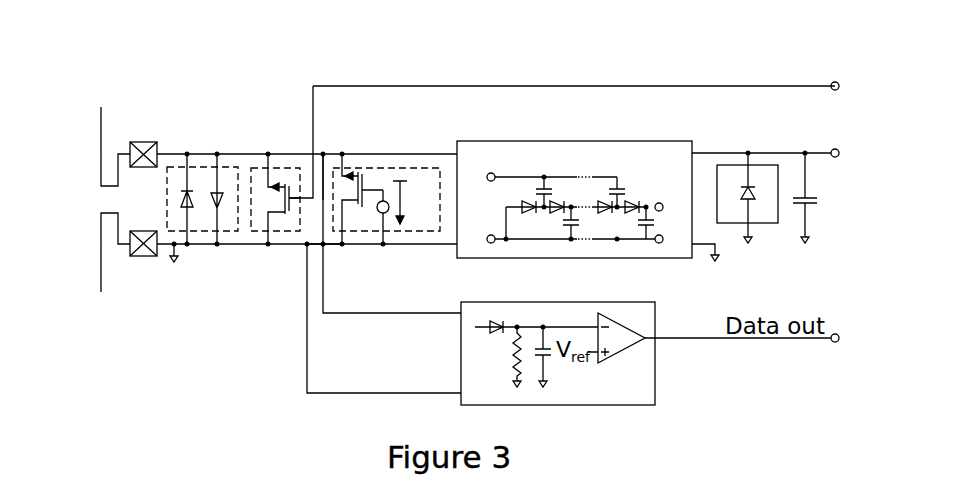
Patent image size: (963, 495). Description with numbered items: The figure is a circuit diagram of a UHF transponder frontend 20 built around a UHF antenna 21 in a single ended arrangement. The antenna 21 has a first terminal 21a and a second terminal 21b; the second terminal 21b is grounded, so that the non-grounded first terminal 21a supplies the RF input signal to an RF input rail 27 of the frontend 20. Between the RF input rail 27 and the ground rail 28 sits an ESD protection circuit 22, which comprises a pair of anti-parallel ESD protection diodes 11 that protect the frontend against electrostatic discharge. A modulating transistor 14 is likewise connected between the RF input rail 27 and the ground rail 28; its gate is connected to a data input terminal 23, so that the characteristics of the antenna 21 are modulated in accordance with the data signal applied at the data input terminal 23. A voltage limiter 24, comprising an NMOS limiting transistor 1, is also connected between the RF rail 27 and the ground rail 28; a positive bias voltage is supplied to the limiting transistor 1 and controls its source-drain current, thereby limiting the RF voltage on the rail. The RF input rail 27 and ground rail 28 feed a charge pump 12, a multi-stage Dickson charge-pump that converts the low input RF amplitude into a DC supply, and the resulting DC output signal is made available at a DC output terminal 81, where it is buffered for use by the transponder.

The UHF transponder frontend 20 is at (615, 74).
The UHF antenna 21 is at (84, 138).
The first antenna terminal 21a is at (101, 150).
The second antenna terminal 21b is at (100, 240).
The ESD protection diodes 11 is at (187, 178).
The ESD protection circuit 22 is at (208, 167).
The modulating transistor 14 is at (297, 167).
The RF input rail 27 is at (324, 152).
The ground rail 28 is at (327, 247).
The NMOS limiting transistor 1 is at (352, 174).
The voltage limiter 24 is at (425, 167).
The charge pump 12 is at (568, 141).
The data input terminal 23 is at (836, 82).
The DC output terminal 81 is at (840, 152).